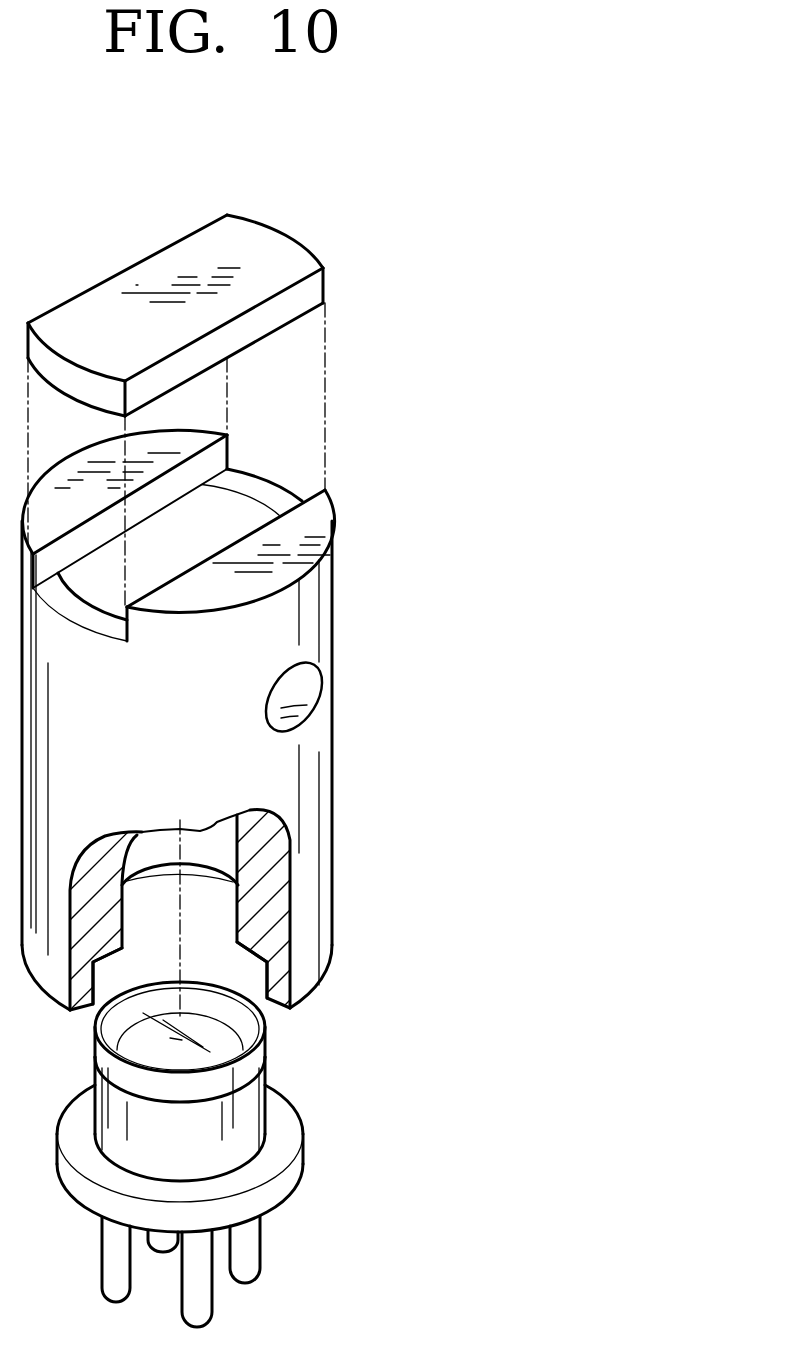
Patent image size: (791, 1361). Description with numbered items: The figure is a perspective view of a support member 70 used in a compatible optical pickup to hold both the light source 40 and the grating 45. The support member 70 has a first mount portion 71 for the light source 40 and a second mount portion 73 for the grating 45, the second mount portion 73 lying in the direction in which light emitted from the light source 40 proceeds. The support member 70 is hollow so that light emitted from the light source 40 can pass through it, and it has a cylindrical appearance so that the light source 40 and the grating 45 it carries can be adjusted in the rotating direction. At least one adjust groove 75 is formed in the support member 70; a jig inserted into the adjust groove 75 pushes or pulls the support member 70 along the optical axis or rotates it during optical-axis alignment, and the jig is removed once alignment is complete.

The light source 40 is at (298, 1063).
The grating 45 is at (158, 253).
The support member 70 is at (377, 533).
The first mount portion 71 is at (254, 958).
The second mount portion 73 is at (228, 517).
The adjust groove 75 is at (308, 682).